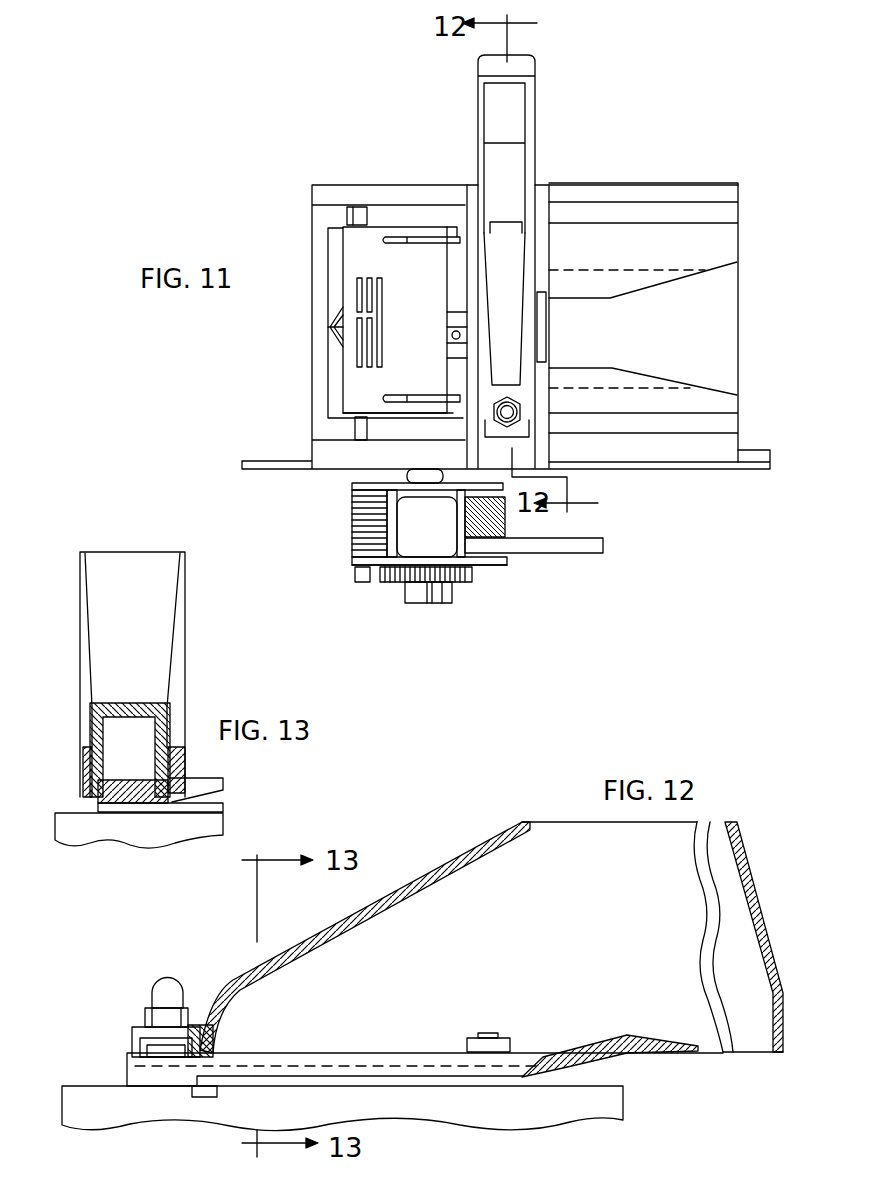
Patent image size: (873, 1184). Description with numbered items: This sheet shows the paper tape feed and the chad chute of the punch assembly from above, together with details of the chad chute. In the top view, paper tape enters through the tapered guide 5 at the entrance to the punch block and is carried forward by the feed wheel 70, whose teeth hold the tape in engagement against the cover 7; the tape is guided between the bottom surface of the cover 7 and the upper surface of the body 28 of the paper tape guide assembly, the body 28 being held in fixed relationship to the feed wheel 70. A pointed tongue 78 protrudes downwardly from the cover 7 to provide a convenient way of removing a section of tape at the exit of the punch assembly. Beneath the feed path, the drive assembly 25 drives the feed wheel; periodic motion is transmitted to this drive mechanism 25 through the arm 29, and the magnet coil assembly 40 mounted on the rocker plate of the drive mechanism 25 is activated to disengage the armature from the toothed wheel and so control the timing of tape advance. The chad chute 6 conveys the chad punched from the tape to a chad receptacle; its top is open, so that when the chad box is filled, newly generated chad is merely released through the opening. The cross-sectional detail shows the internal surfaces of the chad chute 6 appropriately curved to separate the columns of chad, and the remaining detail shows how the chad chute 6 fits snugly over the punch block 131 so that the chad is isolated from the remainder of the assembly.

In FIG. 11, the guide 5 is at (622, 235).
In FIG. 11, the chad chute 6 is at (478, 122).
In FIG. 13, the chad chute 6 is at (183, 635).
In FIG. 12, the chad chute 6 is at (468, 852).
In FIG. 11, the cover plate 7 is at (350, 260).
In FIG. 11, the drive assembly 25 is at (503, 563).
In FIG. 11, the body 28 is at (318, 432).
In FIG. 11, the arm 29 is at (595, 538).
In FIG. 11, the magnet coil assembly 40 is at (352, 525).
In FIG. 11, the feed wheel 70 is at (457, 312).
In FIG. 11, the pointed tongue 78 is at (330, 328).
In FIG. 13, the punch block 131 is at (93, 807).
In FIG. 12, the punch block 131 is at (358, 1070).